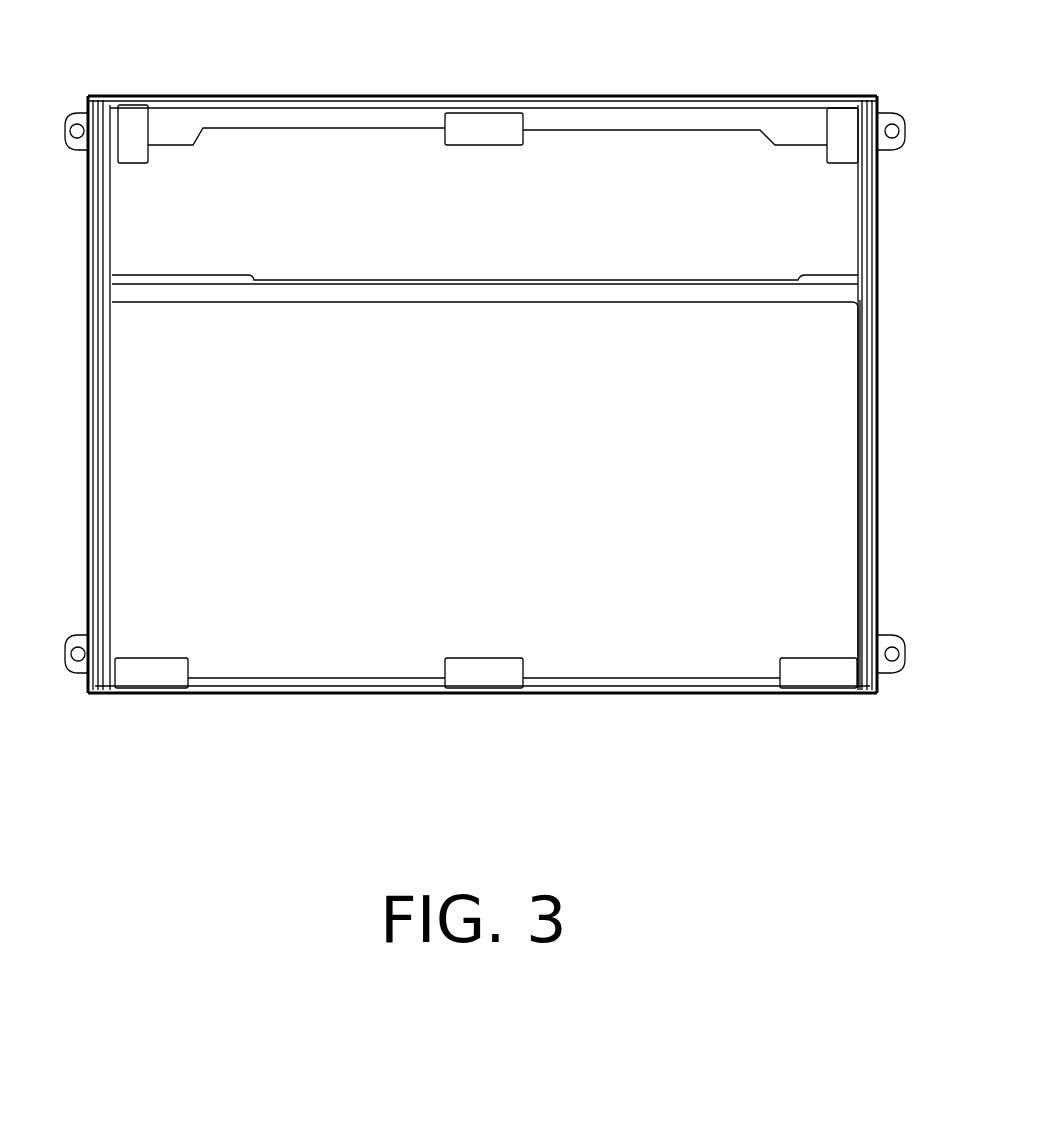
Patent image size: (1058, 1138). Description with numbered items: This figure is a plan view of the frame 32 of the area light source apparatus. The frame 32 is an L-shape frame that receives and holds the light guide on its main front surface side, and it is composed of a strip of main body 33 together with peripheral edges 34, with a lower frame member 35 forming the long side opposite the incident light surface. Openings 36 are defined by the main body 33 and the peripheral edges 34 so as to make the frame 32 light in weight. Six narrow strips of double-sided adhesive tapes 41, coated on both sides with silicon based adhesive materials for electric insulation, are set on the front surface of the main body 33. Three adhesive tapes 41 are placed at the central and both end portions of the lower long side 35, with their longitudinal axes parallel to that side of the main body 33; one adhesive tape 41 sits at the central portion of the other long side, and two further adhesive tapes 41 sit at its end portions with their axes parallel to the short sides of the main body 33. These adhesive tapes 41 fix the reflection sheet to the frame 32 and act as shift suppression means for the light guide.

The frame 32 is at (667, 45).
The main body 33 is at (863, 295).
The peripheral edges 34 is at (878, 510).
The bottom member 35 is at (302, 686).
The openings 36 is at (392, 258).
The double-sided adhesive tapes 41 is at (137, 165).